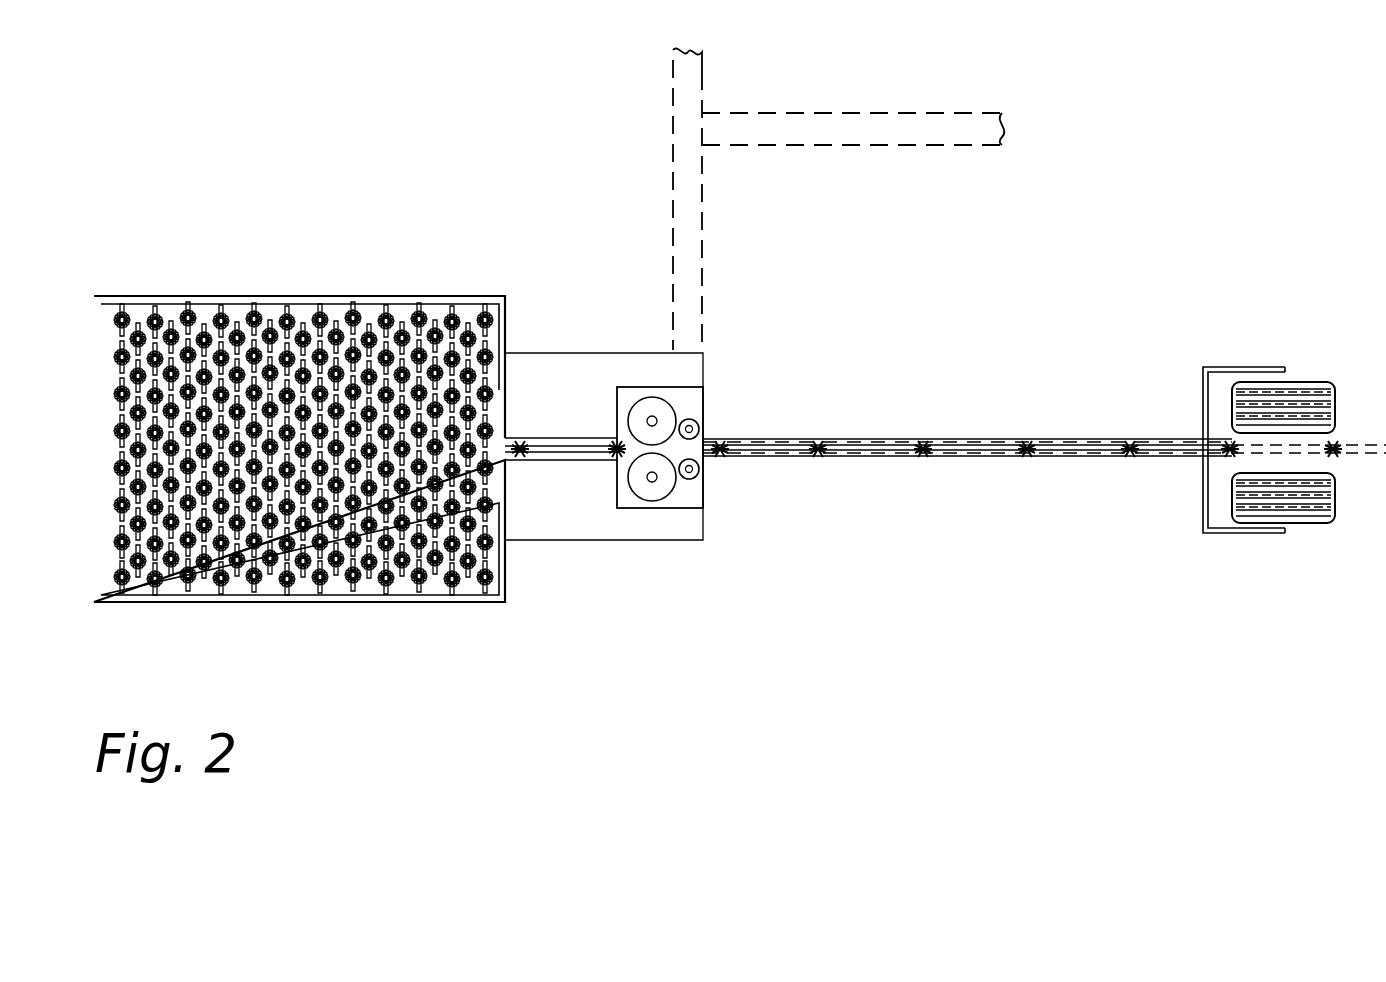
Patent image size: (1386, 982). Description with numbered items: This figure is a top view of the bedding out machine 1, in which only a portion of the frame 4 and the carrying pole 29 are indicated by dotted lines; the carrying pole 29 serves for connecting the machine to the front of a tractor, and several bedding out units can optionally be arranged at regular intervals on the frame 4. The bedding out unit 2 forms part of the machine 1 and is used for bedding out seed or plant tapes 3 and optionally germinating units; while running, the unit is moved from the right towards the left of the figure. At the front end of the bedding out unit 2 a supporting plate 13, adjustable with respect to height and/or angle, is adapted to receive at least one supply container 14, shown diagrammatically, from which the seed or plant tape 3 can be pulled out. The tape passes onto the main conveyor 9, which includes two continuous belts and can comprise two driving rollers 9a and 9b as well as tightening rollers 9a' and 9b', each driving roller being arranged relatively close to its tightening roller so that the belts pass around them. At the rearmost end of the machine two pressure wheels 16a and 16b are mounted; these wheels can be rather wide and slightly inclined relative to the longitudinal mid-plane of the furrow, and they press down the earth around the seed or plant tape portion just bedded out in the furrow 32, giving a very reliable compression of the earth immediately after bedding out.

The machine 1 is at (667, 198).
The bedding out unit 2 is at (704, 541).
The seed or plant tape 3 is at (548, 455).
The frame 4 is at (702, 72).
The main conveyor 9 is at (784, 440).
The driving roller 9a is at (708, 371).
The driving roller 9b is at (662, 565).
The tightening roller 9a' is at (761, 380).
The tightening roller 9b' is at (747, 568).
The supporting plate 13 is at (595, 523).
The supply container 14 is at (356, 604).
The pressure wheel 16a is at (1305, 390).
The pressure wheel 16b is at (1313, 515).
The carrying pole 29 is at (903, 127).
The furrow 32 is at (1235, 460).